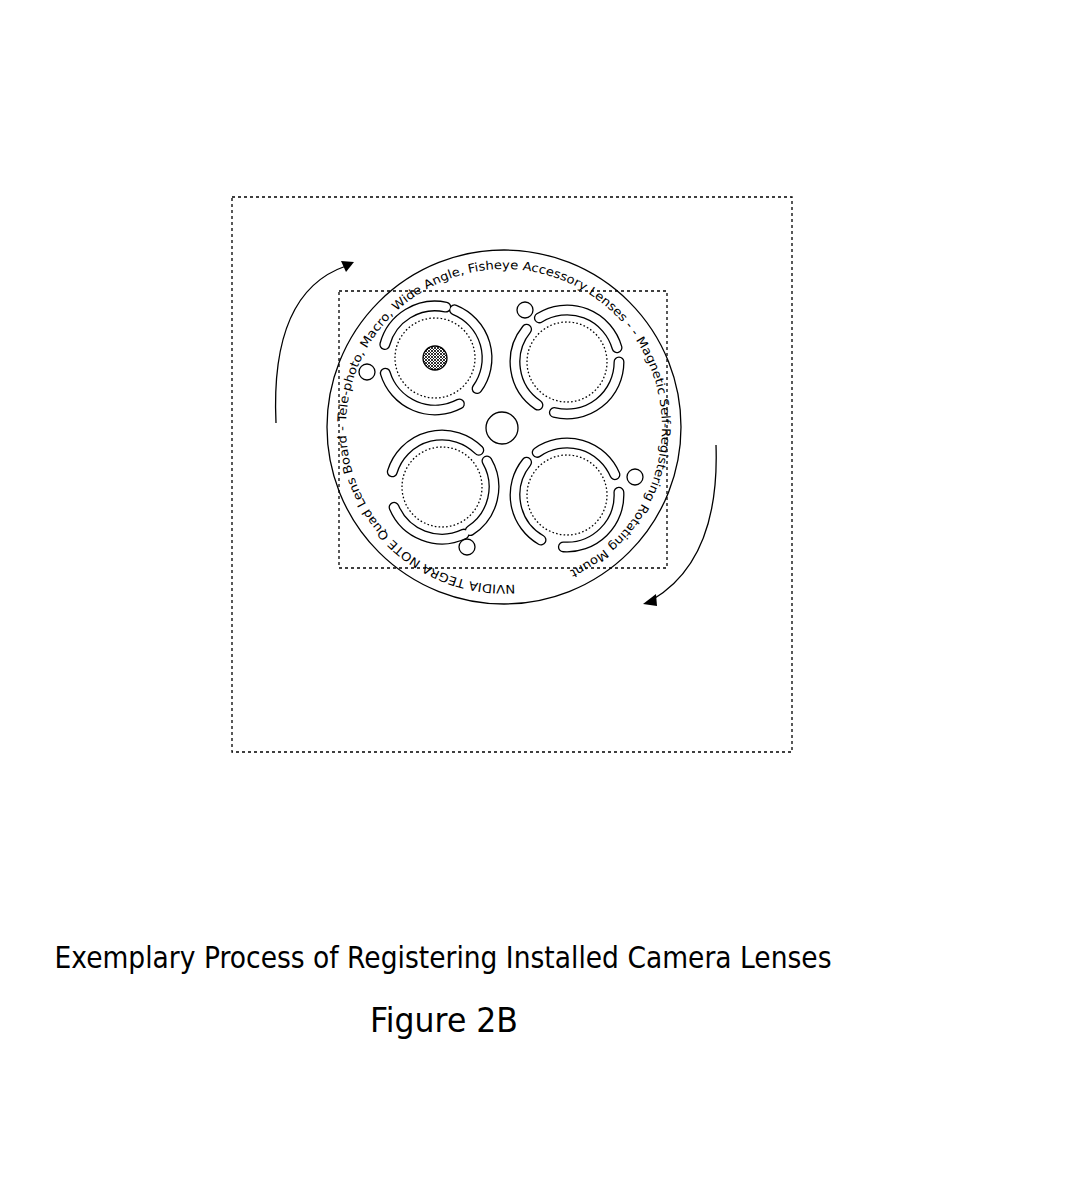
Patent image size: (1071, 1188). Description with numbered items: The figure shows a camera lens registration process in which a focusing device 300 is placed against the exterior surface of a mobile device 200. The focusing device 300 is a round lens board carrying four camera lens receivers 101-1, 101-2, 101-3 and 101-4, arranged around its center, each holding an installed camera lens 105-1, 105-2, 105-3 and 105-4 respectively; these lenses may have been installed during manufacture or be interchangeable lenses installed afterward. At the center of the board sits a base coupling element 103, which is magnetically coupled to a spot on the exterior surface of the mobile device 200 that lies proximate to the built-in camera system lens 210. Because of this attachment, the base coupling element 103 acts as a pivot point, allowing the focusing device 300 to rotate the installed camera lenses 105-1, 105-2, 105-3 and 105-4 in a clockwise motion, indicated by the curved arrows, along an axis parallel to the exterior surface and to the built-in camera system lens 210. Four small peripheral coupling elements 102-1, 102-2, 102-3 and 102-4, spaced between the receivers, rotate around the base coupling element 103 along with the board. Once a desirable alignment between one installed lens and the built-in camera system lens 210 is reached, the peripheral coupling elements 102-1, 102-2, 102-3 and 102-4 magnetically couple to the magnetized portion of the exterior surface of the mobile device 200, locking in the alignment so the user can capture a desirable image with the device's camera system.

The mobile device 200 is at (232, 405).
The focusing device 300 is at (285, 297).
The base coupling element 103 is at (503, 433).
The camera lens receiver 101-1 is at (388, 344).
The camera lens receiver 101-2 is at (427, 525).
The camera lens receiver 101-3 is at (552, 538).
The camera lens receiver 101-4 is at (612, 357).
The installed camera lens 105-1 is at (427, 330).
The installed camera lens 105-2 is at (413, 497).
The installed camera lens 105-3 is at (540, 507).
The installed camera lens 105-4 is at (540, 372).
The built-in camera system lens 210 is at (438, 354).
The peripheral coupling element 102-1 is at (367, 380).
The peripheral coupling element 102-2 is at (466, 556).
The peripheral coupling element 102-3 is at (633, 469).
The peripheral coupling element 102-4 is at (529, 302).